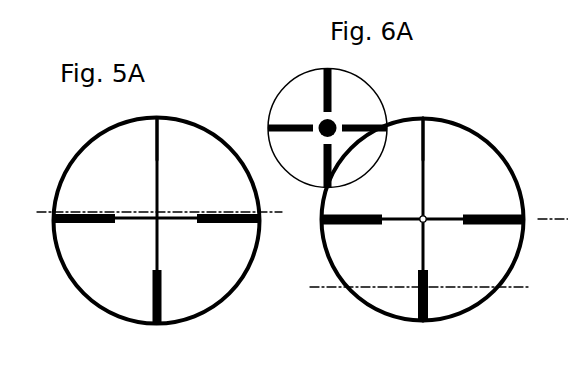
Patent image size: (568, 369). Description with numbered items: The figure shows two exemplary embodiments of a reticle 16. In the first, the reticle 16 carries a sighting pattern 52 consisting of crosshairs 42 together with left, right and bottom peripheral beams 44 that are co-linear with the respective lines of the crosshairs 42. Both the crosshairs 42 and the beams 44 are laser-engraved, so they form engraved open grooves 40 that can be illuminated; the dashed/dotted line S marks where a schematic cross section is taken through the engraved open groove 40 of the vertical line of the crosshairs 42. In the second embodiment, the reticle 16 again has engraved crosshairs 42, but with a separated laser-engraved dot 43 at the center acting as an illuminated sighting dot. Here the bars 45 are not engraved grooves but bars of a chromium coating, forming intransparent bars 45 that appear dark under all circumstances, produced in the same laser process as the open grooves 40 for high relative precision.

In FIG. 5A, the reticle 16 is at (219, 306).
In FIG. 6A, the reticle 16 is at (478, 310).
In FIG. 5A, the engraved open groove 40 is at (160, 141).
In FIG. 6A, the engraved open groove 40 is at (321, 90).
In FIG. 5A, the crosshairs 42 is at (155, 155).
In FIG. 6A, the crosshairs 42 is at (281, 124).
In FIG. 6A, the laser engraved dot 43 is at (336, 121).
In FIG. 5A, the peripheral beams 44 is at (80, 224).
In FIG. 6A, the bars 45 is at (368, 227).
In FIG. 5A, the sighting pattern 52 is at (176, 188).
In FIG. 6A, the sighting pattern 52 is at (483, 171).
In FIG. 5A, the dashed/dotted line S is at (38, 211).
In FIG. 6A, the dashed/dotted line S is at (312, 287).